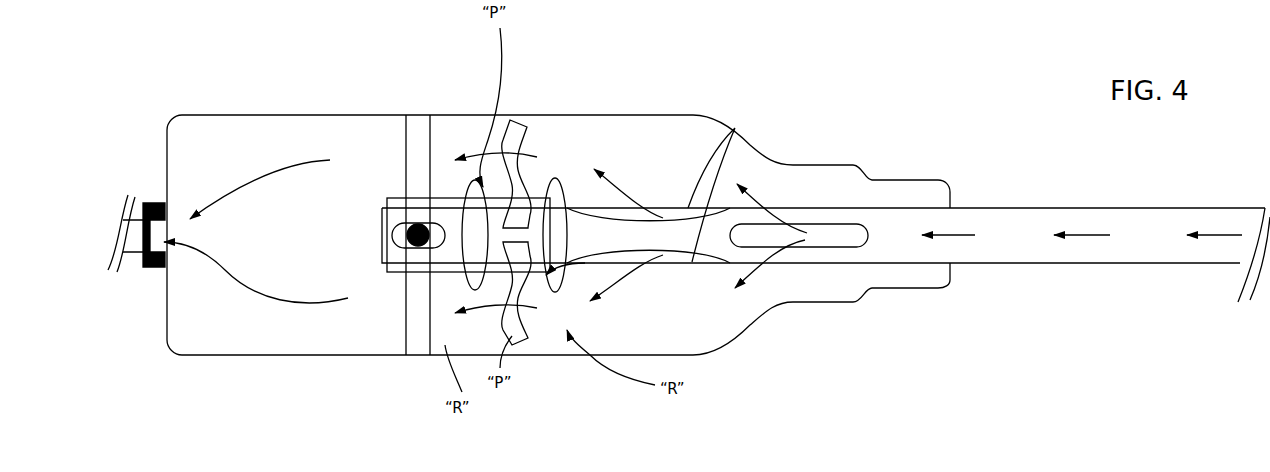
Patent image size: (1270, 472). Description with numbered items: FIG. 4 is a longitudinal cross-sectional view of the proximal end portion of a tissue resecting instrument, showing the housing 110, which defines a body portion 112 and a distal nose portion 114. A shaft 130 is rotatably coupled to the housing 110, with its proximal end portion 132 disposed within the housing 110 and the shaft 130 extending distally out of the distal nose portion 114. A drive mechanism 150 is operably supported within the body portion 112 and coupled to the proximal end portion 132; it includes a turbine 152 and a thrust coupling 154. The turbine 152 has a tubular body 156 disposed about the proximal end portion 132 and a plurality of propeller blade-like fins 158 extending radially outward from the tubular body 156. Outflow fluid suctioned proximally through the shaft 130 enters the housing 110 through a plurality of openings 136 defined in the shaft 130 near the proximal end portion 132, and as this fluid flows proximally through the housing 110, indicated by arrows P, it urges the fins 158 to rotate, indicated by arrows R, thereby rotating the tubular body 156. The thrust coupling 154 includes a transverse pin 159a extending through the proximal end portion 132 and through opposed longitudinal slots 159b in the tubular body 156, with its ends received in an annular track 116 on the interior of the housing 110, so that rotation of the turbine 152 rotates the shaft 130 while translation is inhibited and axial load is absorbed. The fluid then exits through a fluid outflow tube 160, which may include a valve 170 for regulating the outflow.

The housing 110 is at (647, 94).
The body portion 112 is at (330, 115).
The distal nose portion 114 is at (870, 180).
The annular track 116 is at (422, 128).
The shaft 130 is at (1043, 262).
The proximal end portion 132 is at (800, 263).
The openings 136 is at (735, 128).
The drive mechanism 150 is at (568, 292).
The turbine 152 is at (552, 163).
The thrust coupling 154 is at (377, 280).
The tubular body 156 is at (437, 273).
The fins 158 is at (522, 118).
The transverse pin 159a is at (415, 222).
The longitudinal slots 159b is at (392, 273).
The fluid outflow tube 160 is at (132, 242).
The valve 170 is at (152, 203).